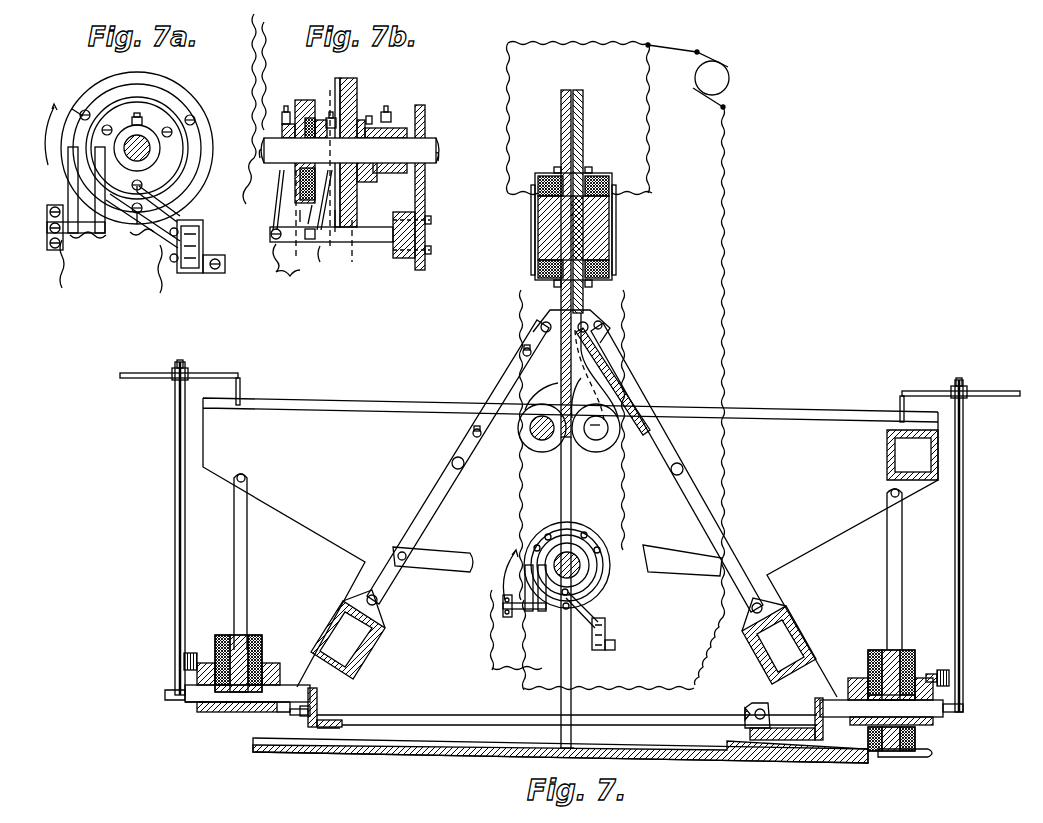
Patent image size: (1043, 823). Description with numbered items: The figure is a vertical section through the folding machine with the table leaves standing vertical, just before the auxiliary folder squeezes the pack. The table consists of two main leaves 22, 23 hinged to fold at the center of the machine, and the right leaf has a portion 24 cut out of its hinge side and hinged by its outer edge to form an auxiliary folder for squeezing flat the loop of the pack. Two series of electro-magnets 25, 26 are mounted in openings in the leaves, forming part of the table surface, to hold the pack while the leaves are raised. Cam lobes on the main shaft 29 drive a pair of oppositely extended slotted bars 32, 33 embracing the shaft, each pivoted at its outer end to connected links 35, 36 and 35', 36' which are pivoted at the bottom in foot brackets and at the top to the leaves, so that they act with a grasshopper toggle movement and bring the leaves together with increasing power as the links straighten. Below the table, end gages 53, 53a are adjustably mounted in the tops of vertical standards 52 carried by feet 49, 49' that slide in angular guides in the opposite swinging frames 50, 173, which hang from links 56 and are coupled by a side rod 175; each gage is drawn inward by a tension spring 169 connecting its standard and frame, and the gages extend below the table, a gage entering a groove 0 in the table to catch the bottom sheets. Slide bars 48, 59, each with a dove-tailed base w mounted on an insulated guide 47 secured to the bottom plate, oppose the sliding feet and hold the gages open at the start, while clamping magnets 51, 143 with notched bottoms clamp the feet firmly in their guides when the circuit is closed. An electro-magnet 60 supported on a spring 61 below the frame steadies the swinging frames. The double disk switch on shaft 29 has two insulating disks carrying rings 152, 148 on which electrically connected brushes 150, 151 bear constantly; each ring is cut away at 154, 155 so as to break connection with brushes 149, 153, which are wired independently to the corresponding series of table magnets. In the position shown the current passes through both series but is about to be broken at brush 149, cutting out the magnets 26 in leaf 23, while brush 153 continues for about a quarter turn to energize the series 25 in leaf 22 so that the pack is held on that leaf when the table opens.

In FIG. 7, the main leaf 22 is at (563, 90).
In FIG. 7, the main leaf 23 is at (583, 90).
In FIG. 7, the groove 0 is at (583, 210).
In FIG. 7, the auxiliary folder 24 is at (636, 440).
In FIG. 7, the electro-magnets 25 is at (535, 250).
In FIG. 7, the electro-magnets 26 is at (614, 255).
In FIG. 7A, the main shaft 29 is at (150, 132).
In FIG. 7B, the main shaft 29 is at (428, 146).
In FIG. 7, the main shaft 29 is at (572, 570).
In FIG. 7, the slotted bar 32 is at (433, 559).
In FIG. 7, the slotted bar 33 is at (682, 560).
In FIG. 7, the link 35 is at (737, 592).
In FIG. 7, the link 35' is at (359, 590).
In FIG. 7, the link 36 is at (677, 467).
In FIG. 7, the link 36' is at (458, 462).
In FIG. 7, the guide 47 is at (727, 745).
In FIG. 7, the slide bar 48 is at (815, 712).
In FIG. 7, the dove-tailed base w is at (792, 728).
In FIG. 7, the foot 49 is at (905, 712).
In FIG. 7, the foot 49' is at (207, 695).
In FIG. 7, the frame 50 is at (842, 684).
In FIG. 7, the magnet 51 is at (905, 652).
In FIG. 7, the vertical standard 52 is at (175, 497).
In FIG. 7, the end gage 53 is at (902, 392).
In FIG. 7, the end gage 53a is at (241, 387).
In FIG. 7, the link 56 is at (248, 560).
In FIG. 7, the slide bar 59 is at (318, 708).
In FIG. 7, the electro-magnet 60 is at (918, 736).
In FIG. 7, the spring 61 is at (905, 757).
In FIG. 7, the magnet 143 is at (256, 648).
In FIG. 7A, the ring 148 is at (198, 166).
In FIG. 7B, the ring 148 is at (336, 90).
In FIG. 7, the ring 148 is at (603, 580).
In FIG. 7A, the brush 149 is at (190, 205).
In FIG. 7B, the brush 149 is at (307, 214).
In FIG. 7, the brush 149 is at (602, 610).
In FIG. 7A, the brush 150 is at (118, 222).
In FIG. 7B, the brush 150 is at (280, 195).
In FIG. 7, the brush 150 is at (530, 602).
In FIG. 7A, the brush 151 is at (66, 165).
In FIG. 7B, the brush 151 is at (326, 242).
In FIG. 7, the brush 151 is at (525, 583).
In FIG. 7A, the ring 152 is at (172, 157).
In FIG. 7B, the ring 152 is at (295, 112).
In FIG. 7, the ring 152 is at (590, 569).
In FIG. 7A, the brush 153 is at (150, 250).
In FIG. 7B, the brush 153 is at (352, 253).
In FIG. 7, the brush 153 is at (592, 641).
In FIG. 7A, the cut-away portion 154 is at (168, 108).
In FIG. 7B, the cut-away portion 154 is at (312, 102).
In FIG. 7, the cut-away portion 154 is at (585, 545).
In FIG. 7A, the cut-away portion 155 is at (170, 86).
In FIG. 7B, the cut-away portion 155 is at (350, 78).
In FIG. 7, the cut-away portion 155 is at (578, 530).
In FIG. 7, the spring 169 is at (196, 646).
In FIG. 7, the frame 173 is at (272, 663).
In FIG. 7, the side rod 175 is at (512, 718).